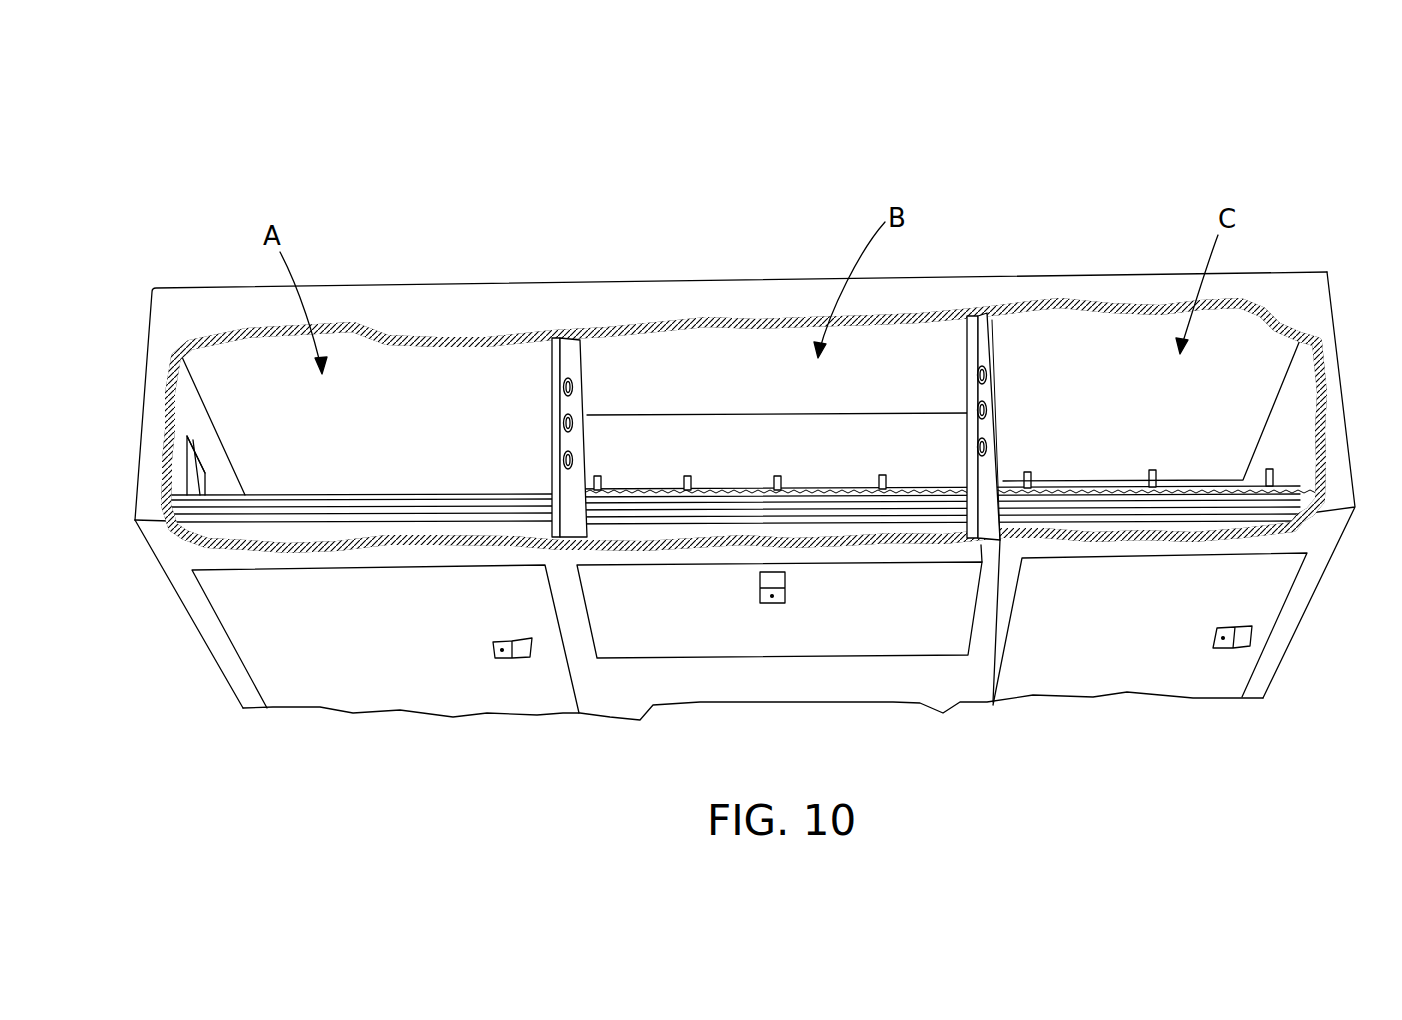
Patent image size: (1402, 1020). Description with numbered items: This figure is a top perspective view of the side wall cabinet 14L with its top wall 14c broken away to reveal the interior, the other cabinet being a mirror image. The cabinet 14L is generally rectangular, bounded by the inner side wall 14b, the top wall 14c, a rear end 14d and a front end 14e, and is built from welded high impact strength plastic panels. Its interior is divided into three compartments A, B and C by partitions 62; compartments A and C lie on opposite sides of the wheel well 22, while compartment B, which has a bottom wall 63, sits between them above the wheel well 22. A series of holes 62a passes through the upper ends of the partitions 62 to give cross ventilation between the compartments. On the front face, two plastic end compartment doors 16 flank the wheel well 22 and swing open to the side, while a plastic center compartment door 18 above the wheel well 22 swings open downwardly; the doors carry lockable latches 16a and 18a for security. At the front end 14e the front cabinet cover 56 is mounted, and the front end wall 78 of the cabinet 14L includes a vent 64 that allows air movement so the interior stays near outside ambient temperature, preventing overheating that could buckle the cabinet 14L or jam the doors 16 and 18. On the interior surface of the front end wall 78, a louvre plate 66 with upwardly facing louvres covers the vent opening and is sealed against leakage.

The side wall cabinet 14L is at (812, 162).
The inner side wall 14b is at (416, 436).
The top wall 14c is at (449, 312).
The rear end 14d is at (1347, 403).
The front end 14e is at (147, 325).
The end compartment door 16 is at (351, 647).
The lockable latch 16a is at (517, 638).
The center compartment door 18 is at (882, 625).
The lockable latch 18a is at (760, 580).
The wheel well 22 is at (800, 702).
The front cabinet cover 56 is at (187, 617).
The partition 62 is at (573, 355).
The holes 62a is at (558, 457).
The bottom wall 63 is at (800, 459).
The vent 64 is at (204, 464).
The louvre plate 66 is at (193, 447).
The front end wall 78 is at (186, 418).